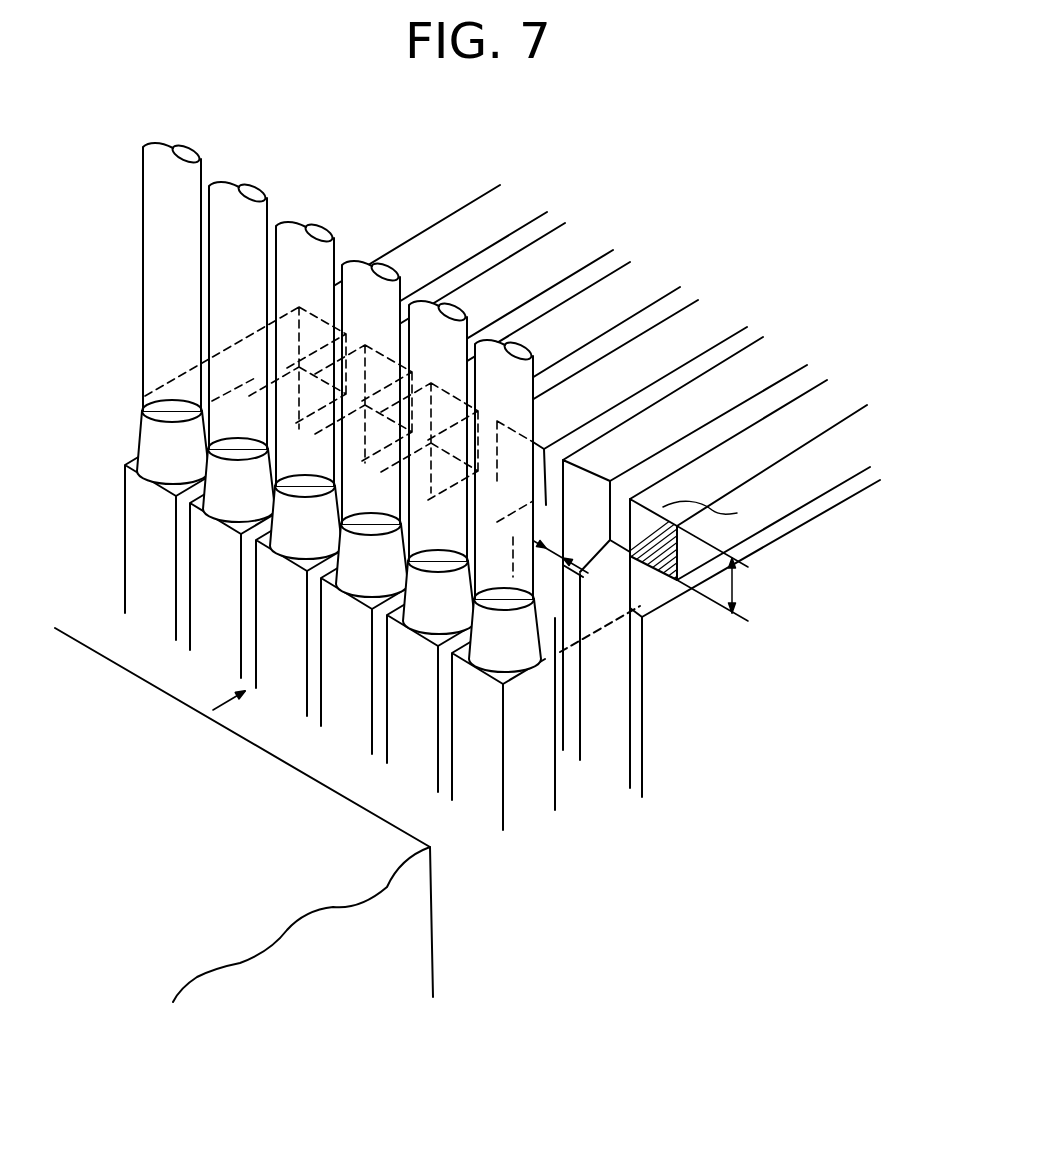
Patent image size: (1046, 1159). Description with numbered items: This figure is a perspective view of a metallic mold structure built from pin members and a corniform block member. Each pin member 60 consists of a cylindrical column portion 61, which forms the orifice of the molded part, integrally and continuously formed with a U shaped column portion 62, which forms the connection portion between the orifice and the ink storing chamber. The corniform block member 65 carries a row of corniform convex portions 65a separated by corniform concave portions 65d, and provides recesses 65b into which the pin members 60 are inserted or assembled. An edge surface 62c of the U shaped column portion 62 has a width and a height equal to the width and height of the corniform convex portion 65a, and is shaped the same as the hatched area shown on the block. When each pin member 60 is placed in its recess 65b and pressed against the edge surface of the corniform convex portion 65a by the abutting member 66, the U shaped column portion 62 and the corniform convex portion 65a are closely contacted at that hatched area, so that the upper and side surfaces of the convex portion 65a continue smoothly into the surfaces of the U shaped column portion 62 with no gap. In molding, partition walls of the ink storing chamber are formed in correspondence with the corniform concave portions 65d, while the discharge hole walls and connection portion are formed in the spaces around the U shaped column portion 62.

The pin member 60 is at (394, 653).
The cylindrical column portion 61 is at (463, 632).
The U shaped column portion 62 is at (421, 439).
The edge surface 62c is at (549, 622).
The corniform block member 65 is at (485, 174).
The corniform convex portion 65a is at (767, 402).
The recess 65b is at (637, 588).
The corniform concave portion 65d is at (712, 353).
The abutting member 66 is at (417, 935).